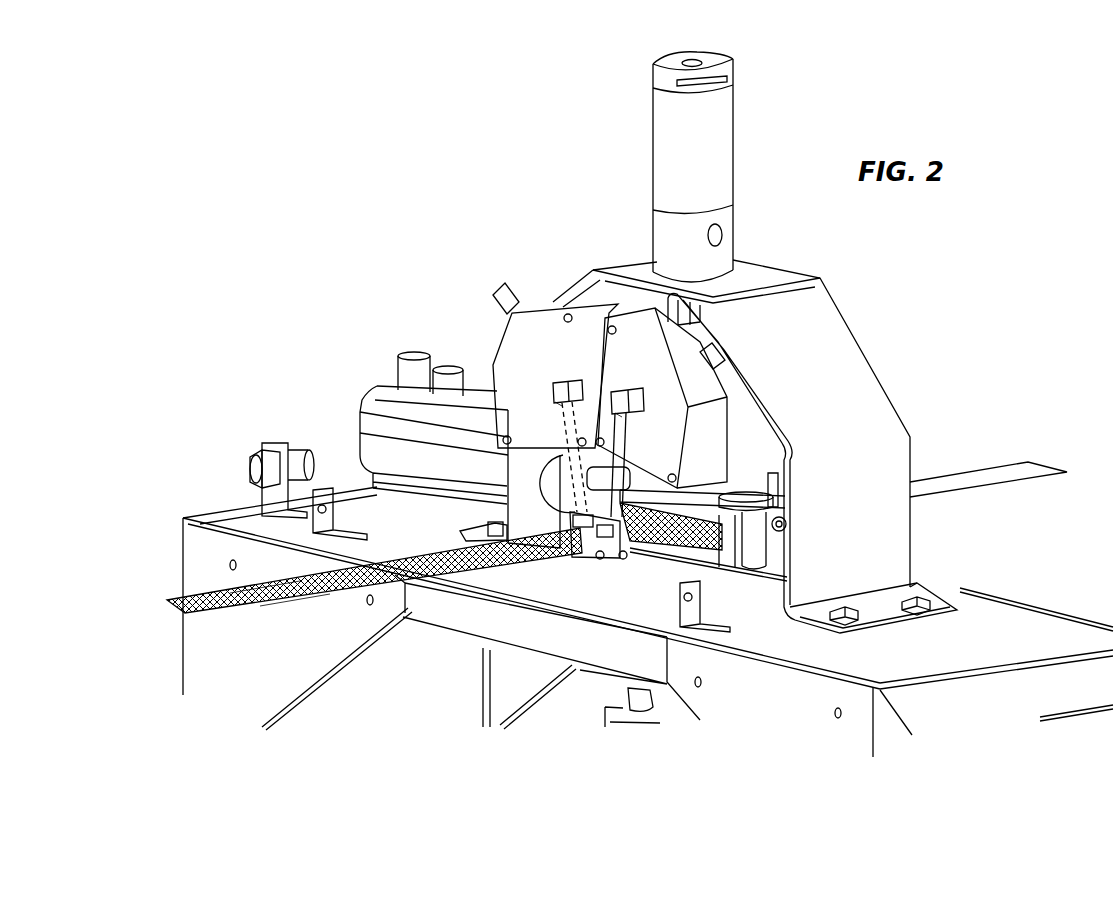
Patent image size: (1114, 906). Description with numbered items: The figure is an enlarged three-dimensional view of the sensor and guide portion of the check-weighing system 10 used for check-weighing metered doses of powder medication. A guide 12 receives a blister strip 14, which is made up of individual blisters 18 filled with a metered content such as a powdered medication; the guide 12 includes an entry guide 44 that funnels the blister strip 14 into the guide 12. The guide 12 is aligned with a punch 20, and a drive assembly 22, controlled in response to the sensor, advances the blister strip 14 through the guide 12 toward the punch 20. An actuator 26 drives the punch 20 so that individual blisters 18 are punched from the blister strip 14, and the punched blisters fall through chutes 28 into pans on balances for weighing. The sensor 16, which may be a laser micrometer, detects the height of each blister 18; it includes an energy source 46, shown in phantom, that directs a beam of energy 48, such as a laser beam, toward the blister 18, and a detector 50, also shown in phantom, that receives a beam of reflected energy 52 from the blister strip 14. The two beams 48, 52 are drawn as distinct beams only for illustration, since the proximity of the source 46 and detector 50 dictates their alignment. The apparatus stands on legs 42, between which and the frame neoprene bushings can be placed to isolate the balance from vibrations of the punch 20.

The check-weighing system 10 is at (560, 260).
The guide 12 is at (640, 550).
The blister strip 14 is at (312, 600).
The sensor 16 is at (550, 429).
The blisters 18 is at (268, 603).
The punch 20 is at (748, 421).
The drive assembly 22 is at (368, 432).
The actuator 26 is at (668, 122).
The chutes 28 is at (620, 693).
The legs 42 is at (993, 698).
The entry guide 44 is at (583, 563).
The energy source 46 is at (566, 385).
The beam of energy 48 is at (572, 495).
The detector 50 is at (551, 391).
The beam of reflected energy 52 is at (572, 465).